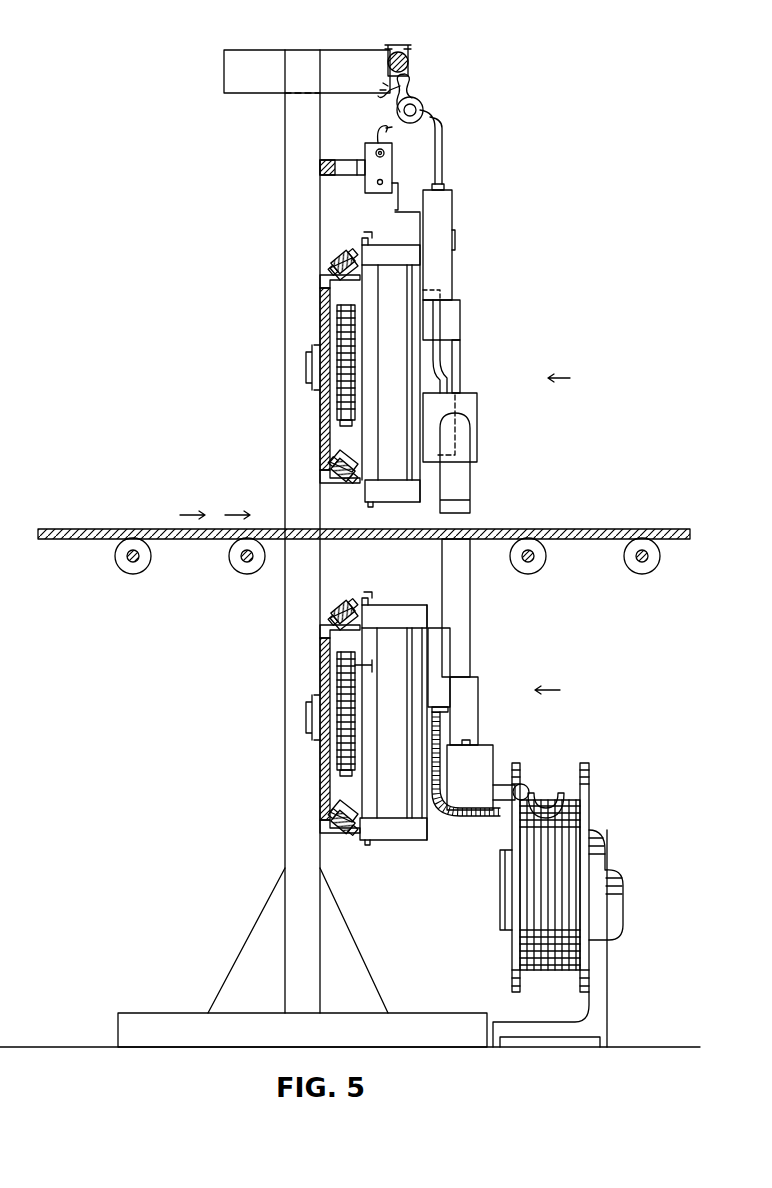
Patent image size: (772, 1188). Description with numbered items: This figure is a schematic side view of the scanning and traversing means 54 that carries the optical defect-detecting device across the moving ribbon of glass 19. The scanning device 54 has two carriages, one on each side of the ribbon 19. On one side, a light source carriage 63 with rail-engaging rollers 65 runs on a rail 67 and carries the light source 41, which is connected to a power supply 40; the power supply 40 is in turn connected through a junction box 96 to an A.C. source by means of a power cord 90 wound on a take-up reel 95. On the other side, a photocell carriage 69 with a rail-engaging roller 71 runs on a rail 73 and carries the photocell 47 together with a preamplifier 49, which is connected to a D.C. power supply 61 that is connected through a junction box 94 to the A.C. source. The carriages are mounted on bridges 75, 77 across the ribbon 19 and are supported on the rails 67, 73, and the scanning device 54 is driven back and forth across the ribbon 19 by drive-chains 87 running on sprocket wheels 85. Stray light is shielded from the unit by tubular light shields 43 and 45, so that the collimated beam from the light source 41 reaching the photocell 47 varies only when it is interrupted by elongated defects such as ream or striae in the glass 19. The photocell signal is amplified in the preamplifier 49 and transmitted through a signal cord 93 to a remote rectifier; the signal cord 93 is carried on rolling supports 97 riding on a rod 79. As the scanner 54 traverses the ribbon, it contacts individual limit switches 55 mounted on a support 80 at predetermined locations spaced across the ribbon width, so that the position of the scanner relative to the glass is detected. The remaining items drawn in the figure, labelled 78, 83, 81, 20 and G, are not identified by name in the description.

The overhead beam 78 is at (243, 50).
The rolling supports 97 is at (397, 45).
The rod 79 is at (418, 78).
The limit switches 55 is at (365, 150).
The signal cord 93 is at (442, 160).
The support 80 is at (328, 176).
The rail-engaging roller 71 is at (336, 256).
The rail 73 is at (330, 270).
The preamplifier 49 is at (455, 268).
The junction box 94 is at (445, 327).
The D.C. power supply 61 is at (460, 356).
The drive-chains 87 is at (355, 380).
The sprocket wheels 85 is at (346, 420).
The scanning and traversing means 54 is at (571, 535).
The bridge 75 is at (322, 410).
The photocell 47 is at (478, 420).
The tubular light shield 45 is at (471, 482).
The photocell carriage 69 is at (384, 500).
The glass sheet direction G is at (155, 527).
The moving ribbon of glass 19 is at (538, 529).
The conveyor rollers 20 is at (229, 557).
The rail-engaging rollers 65 is at (336, 606).
The rail 67 is at (328, 622).
The tubular light shield 43 is at (470, 606).
The junction box 96 is at (450, 662).
The vertical post 83 is at (285, 706).
The light source 41 is at (478, 714).
The power supply 40 is at (488, 775).
The power cord 90 is at (547, 793).
The bridge 77 is at (322, 773).
The take-up reel 95 is at (607, 815).
The light source carriage 63 is at (420, 832).
The base 81 is at (173, 1013).